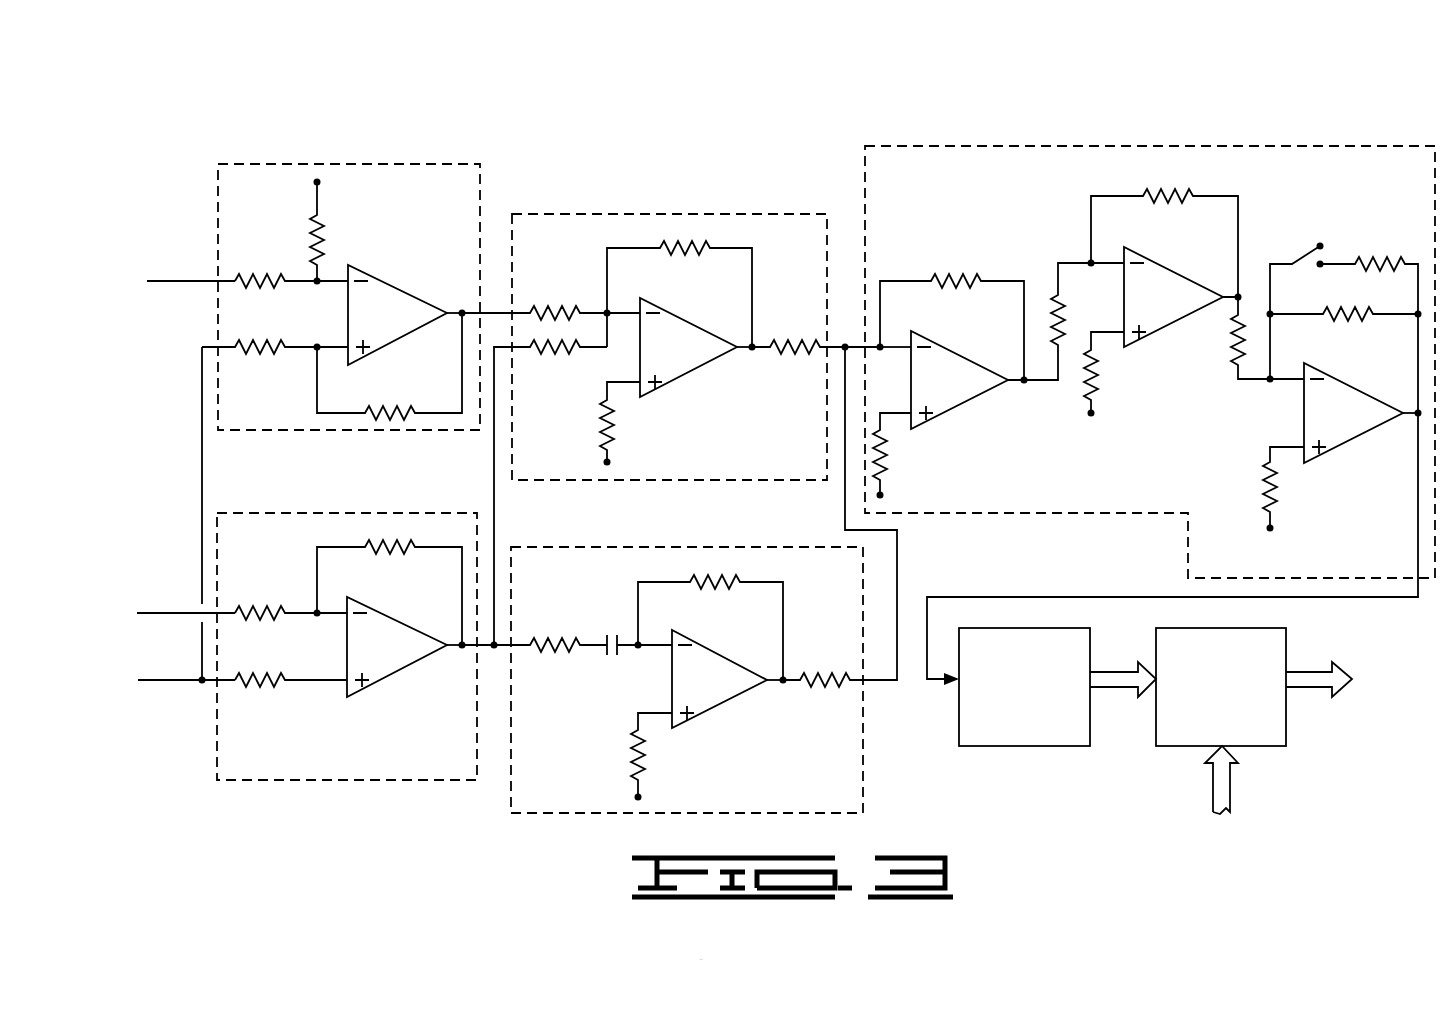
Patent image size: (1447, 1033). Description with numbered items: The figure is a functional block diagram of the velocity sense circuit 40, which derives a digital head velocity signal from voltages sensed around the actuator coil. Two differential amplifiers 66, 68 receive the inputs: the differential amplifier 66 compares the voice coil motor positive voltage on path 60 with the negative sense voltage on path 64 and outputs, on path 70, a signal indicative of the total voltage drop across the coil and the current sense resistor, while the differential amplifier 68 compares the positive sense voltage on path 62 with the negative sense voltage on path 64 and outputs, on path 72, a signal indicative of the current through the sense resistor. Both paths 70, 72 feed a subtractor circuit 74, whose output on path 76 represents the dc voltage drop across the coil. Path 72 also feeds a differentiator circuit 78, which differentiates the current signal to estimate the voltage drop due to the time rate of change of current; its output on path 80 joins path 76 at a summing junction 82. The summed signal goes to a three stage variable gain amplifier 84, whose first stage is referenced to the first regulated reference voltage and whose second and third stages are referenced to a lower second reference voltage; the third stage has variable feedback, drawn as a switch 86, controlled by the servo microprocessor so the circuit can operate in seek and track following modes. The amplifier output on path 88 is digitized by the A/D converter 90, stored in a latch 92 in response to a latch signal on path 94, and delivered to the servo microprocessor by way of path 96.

The velocity sense circuit 40 is at (214, 122).
The path 60 is at (180, 283).
The path 62 is at (137, 613).
The path 64 is at (160, 683).
The differential amplifier 66 is at (312, 155).
The differential amplifier 68 is at (354, 505).
The path 70 is at (495, 313).
The path 72 is at (494, 480).
The subtractor circuit 74 is at (604, 205).
The path 76 is at (846, 335).
The differentiator circuit 78 is at (671, 540).
The path 80 is at (846, 488).
The summing junction 82 is at (852, 320).
The variable gain amplifier 84 is at (1068, 134).
The switch 86 is at (1294, 246).
The path 88 is at (1138, 597).
The A/D converter 90 is at (1012, 737).
The latch 92 is at (1186, 738).
The path 94 is at (1225, 786).
The path 96 is at (1310, 668).